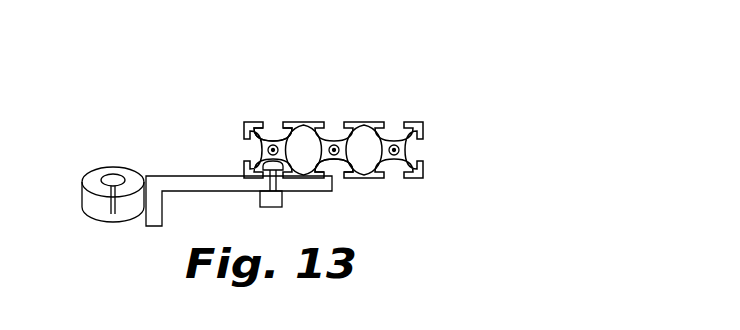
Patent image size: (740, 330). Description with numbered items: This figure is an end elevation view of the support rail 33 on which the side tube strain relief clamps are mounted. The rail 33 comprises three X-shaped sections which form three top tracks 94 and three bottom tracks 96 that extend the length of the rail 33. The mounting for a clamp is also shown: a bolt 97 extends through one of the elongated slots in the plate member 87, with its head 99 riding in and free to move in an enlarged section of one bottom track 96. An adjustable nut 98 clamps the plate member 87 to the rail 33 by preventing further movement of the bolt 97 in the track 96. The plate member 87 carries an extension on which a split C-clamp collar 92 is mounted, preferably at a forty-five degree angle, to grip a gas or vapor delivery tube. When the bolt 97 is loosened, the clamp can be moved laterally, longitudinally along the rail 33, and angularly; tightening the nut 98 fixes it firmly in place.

The support rail 33 is at (418, 123).
The plate member 87 is at (198, 175).
The split C-clamp collar 92 is at (102, 168).
The top tracks 94 is at (398, 125).
The bottom tracks 96 is at (393, 173).
The bolt 97 is at (272, 180).
The adjustable nut 98 is at (282, 195).
The head 99 is at (262, 171).